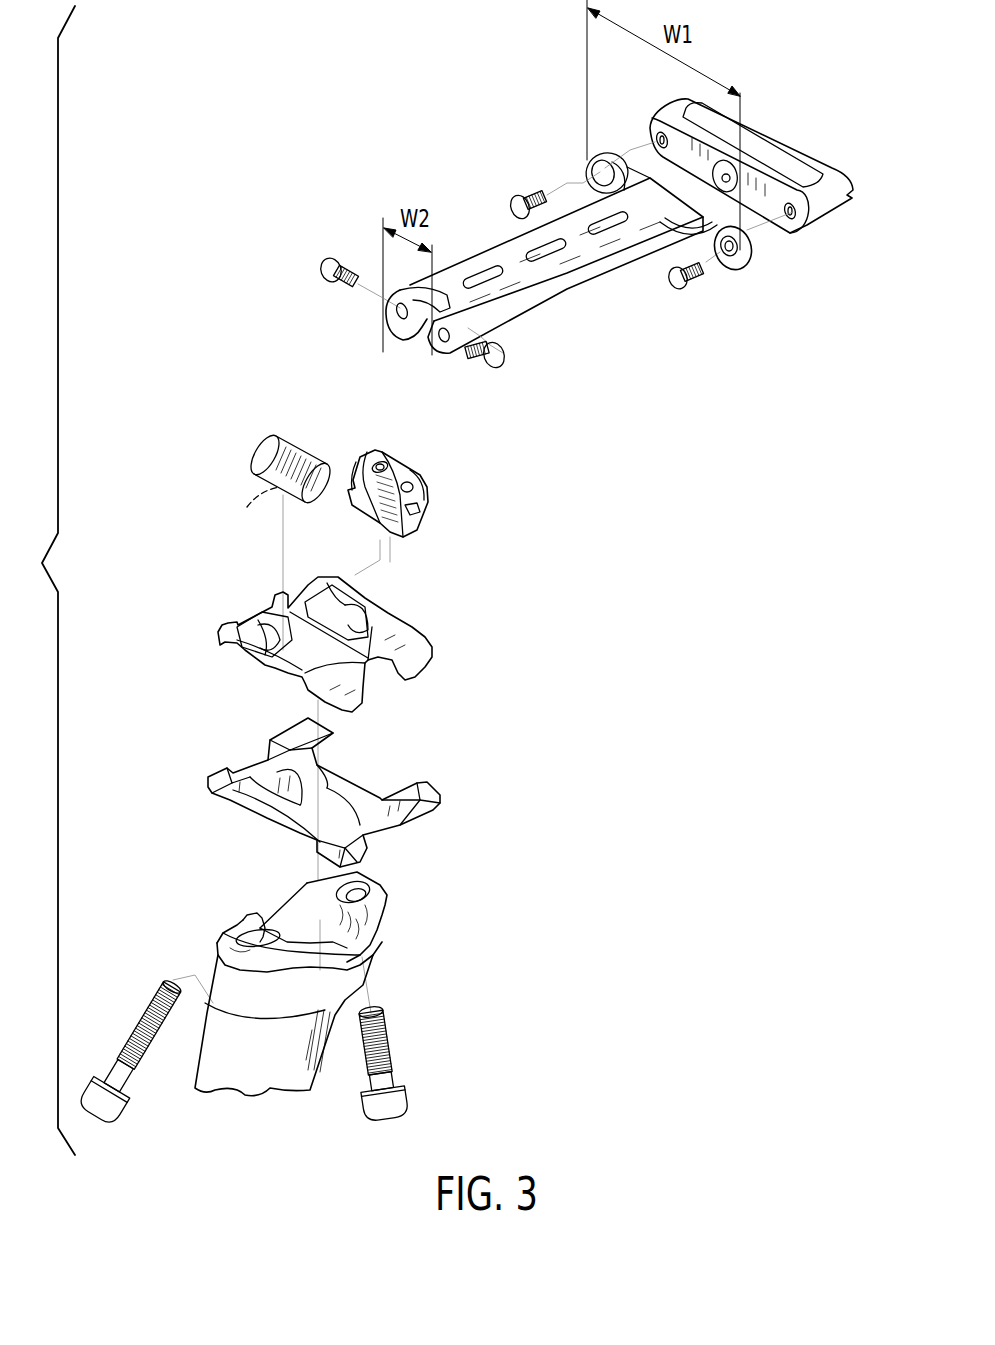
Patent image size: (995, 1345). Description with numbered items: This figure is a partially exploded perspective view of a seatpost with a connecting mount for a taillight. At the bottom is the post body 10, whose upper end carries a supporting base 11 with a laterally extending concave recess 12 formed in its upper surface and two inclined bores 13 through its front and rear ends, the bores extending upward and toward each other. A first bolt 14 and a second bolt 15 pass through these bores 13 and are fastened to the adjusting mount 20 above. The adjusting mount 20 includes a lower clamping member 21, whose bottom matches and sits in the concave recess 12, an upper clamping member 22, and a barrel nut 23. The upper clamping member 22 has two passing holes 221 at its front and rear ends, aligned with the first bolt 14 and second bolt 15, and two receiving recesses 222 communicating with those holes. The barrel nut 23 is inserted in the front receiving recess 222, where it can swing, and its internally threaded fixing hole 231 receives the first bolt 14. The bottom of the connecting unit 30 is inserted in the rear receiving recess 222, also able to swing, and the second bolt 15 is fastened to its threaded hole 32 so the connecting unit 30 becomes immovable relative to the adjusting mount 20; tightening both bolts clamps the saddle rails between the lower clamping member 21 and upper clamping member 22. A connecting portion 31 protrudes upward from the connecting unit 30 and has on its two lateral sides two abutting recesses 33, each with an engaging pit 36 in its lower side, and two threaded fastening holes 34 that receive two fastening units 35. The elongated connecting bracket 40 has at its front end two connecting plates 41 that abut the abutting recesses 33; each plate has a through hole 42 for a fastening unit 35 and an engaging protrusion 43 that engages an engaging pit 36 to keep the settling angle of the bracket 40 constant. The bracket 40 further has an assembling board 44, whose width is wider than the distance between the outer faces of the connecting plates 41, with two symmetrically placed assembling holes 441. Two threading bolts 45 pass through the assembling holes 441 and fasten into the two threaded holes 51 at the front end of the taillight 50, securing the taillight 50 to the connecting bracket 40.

The post body 10 is at (264, 1013).
The supporting base 11 is at (297, 1002).
The concave recess 12 is at (297, 918).
The bores 13 is at (360, 890).
The first bolt 14 is at (145, 1025).
The second bolt 15 is at (384, 1050).
The adjusting mount 20 is at (368, 649).
The lower clamping member 21 is at (417, 820).
The upper clamping member 22 is at (340, 615).
The passing holes 221 is at (357, 613).
The receiving recesses 222 is at (320, 603).
The barrel nut 23 is at (257, 469).
The fixing hole 231 is at (246, 508).
The connecting unit 30 is at (444, 473).
The connecting portion 31 is at (367, 490).
The threaded hole 32 is at (378, 460).
The abutting recesses 33 is at (420, 480).
The fastening holes 34 is at (414, 492).
The fastening units 35 is at (505, 352).
The engaging pit 36 is at (420, 512).
The connecting bracket 40 is at (555, 287).
The connecting plates 41 is at (390, 320).
The through hole 42 is at (400, 338).
The engaging protrusion 43 is at (440, 350).
The assembling board 44 is at (690, 274).
The assembling holes 441 is at (713, 270).
The threading bolts 45 is at (678, 292).
The taillight 50 is at (731, 153).
The threaded holes 51 is at (655, 141).